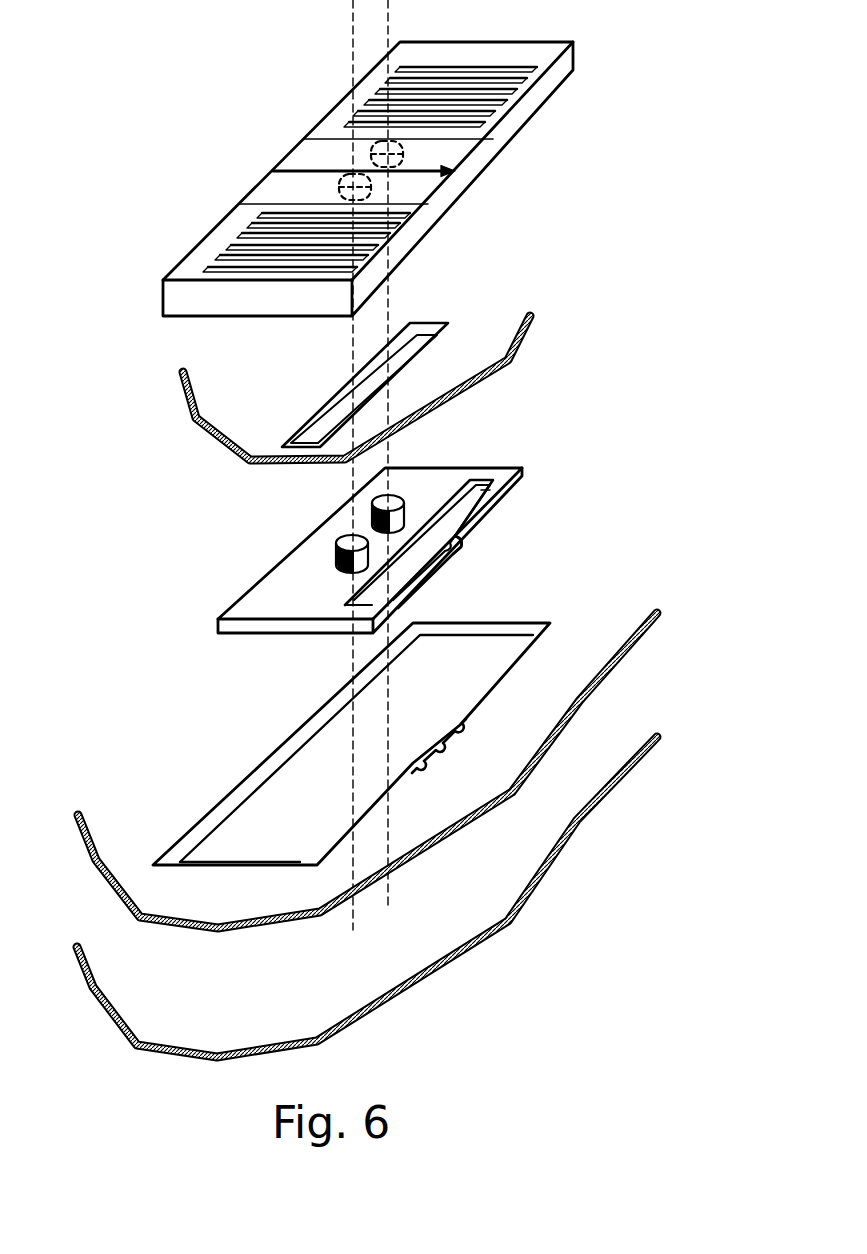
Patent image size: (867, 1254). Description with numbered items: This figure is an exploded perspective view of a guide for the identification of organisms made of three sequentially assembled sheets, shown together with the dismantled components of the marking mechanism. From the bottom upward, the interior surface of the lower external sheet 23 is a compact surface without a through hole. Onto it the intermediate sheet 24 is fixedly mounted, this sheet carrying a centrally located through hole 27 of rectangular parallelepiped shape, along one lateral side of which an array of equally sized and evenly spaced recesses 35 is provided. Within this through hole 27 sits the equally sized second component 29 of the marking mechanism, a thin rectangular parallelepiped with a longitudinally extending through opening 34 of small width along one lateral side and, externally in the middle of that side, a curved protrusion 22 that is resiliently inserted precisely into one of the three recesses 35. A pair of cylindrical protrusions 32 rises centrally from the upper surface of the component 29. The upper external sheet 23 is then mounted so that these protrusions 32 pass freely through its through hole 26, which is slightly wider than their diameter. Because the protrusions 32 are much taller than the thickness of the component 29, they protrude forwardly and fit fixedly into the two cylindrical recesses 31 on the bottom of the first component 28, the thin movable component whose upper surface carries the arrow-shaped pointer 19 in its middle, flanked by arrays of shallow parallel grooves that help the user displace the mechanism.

The pointer 19 is at (345, 172).
The protrusion of curved shape 22 is at (463, 547).
The external sheet 23 is at (540, 895).
The intermediate sheet 24 is at (617, 683).
The through hole 26 is at (372, 386).
The through hole 27 is at (302, 773).
The first component 28 is at (577, 63).
The second component 29 is at (232, 602).
The recesses of cylindrical shape 31 is at (374, 153).
The protrusions of cylindrical shape 32 is at (334, 546).
The through opening 34 is at (467, 503).
The recesses 35 is at (453, 723).